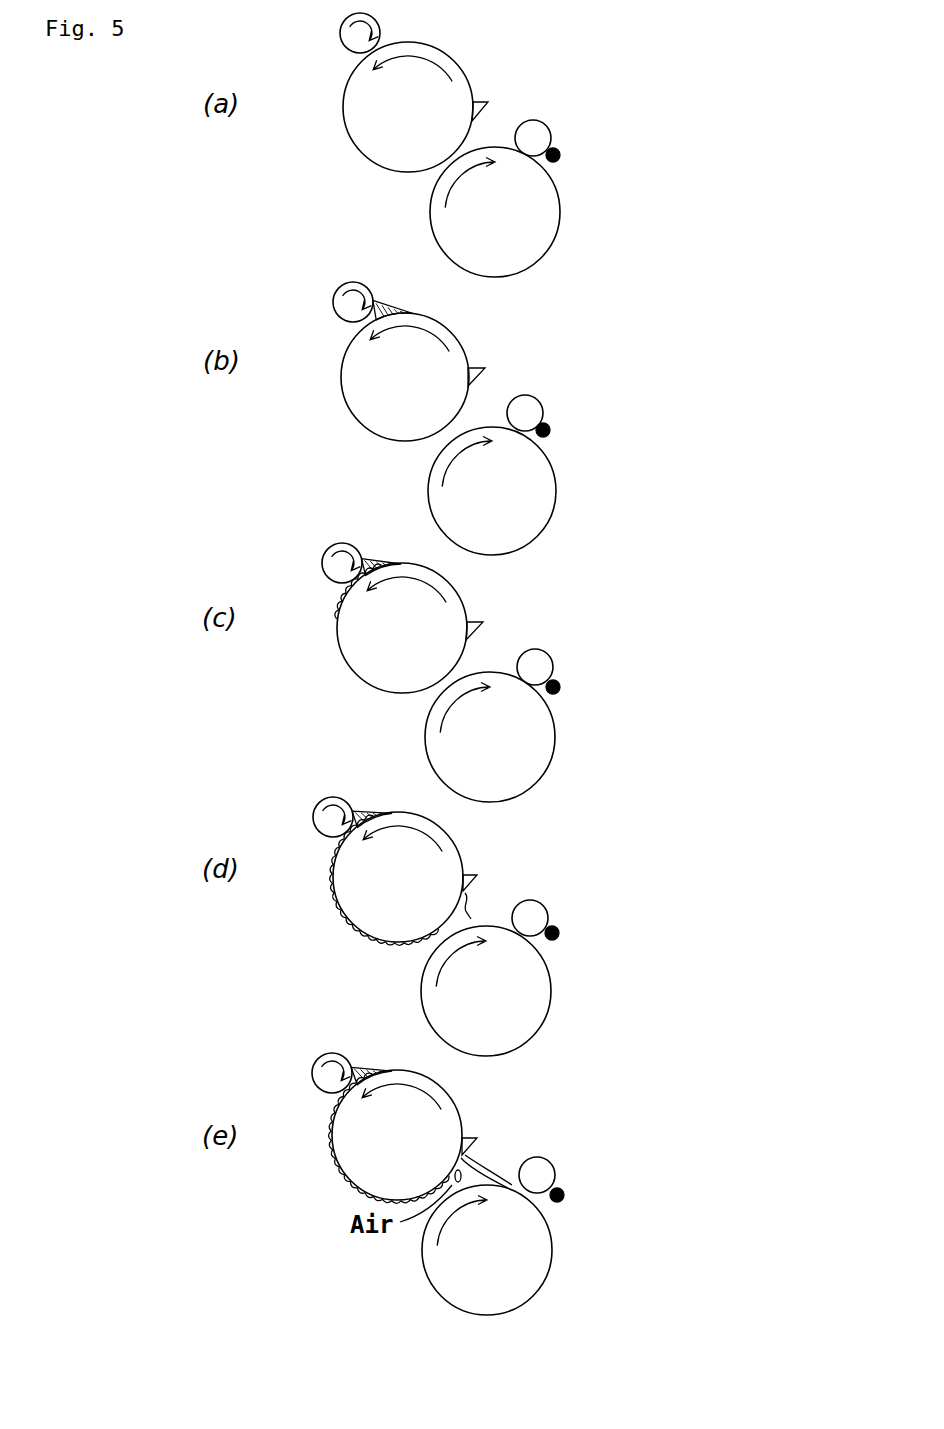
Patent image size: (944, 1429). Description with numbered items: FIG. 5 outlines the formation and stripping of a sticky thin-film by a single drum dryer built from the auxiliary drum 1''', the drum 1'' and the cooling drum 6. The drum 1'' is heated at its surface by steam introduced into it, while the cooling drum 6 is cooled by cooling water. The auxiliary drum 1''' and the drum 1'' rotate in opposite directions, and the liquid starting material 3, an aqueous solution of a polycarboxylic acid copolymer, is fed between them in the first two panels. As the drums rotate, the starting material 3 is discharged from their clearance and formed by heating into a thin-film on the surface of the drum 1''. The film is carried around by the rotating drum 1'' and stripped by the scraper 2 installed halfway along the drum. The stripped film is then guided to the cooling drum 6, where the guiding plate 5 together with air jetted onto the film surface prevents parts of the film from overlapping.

The auxiliary drum 1''' is at (331, 31).
The drum 1'' is at (441, 99).
The scraper 2 is at (488, 102).
The aqueous solution of a polycarboxylic acid copolymer 3 is at (381, 305).
The guiding plate 5 is at (473, 1163).
The cooling drum 6 is at (543, 172).